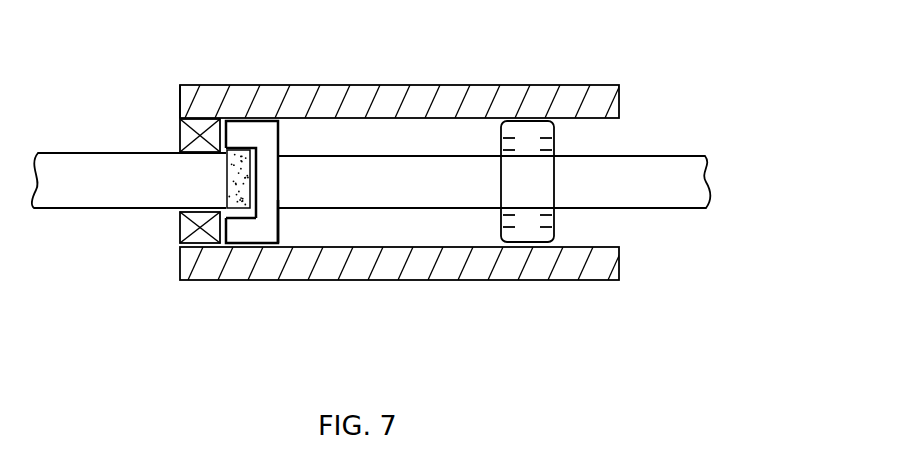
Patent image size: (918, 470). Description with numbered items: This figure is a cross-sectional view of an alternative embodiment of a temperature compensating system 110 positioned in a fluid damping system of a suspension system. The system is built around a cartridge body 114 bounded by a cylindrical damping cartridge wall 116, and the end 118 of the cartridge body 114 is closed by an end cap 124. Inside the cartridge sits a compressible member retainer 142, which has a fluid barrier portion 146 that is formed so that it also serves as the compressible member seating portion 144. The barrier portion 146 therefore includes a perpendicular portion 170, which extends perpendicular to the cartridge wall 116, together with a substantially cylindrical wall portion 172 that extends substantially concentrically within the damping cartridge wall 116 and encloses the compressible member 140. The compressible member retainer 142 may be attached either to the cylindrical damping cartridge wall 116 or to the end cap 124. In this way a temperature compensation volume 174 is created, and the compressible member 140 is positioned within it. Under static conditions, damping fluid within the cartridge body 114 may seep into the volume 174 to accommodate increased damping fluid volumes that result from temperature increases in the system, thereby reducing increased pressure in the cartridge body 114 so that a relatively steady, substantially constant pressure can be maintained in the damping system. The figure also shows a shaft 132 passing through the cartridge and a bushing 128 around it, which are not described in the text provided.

The temperature compensating system 110 is at (425, 318).
The cartridge body 114 is at (477, 82).
The damping cartridge wall 116 is at (620, 84).
The end of cartridge body 118 is at (181, 85).
The end cap 124 is at (185, 232).
The bushing 128 is at (553, 228).
The shaft 132 is at (668, 156).
The compressible member 140 is at (231, 178).
The compressible member retainer 142 is at (296, 130).
The compressible member seating portion 144 is at (180, 222).
The fluid barrier portion 146 is at (290, 225).
The perpendicular portion 170 is at (266, 150).
The cylindrical wall portion 172 is at (266, 237).
The temperature compensation volume 174 is at (215, 150).